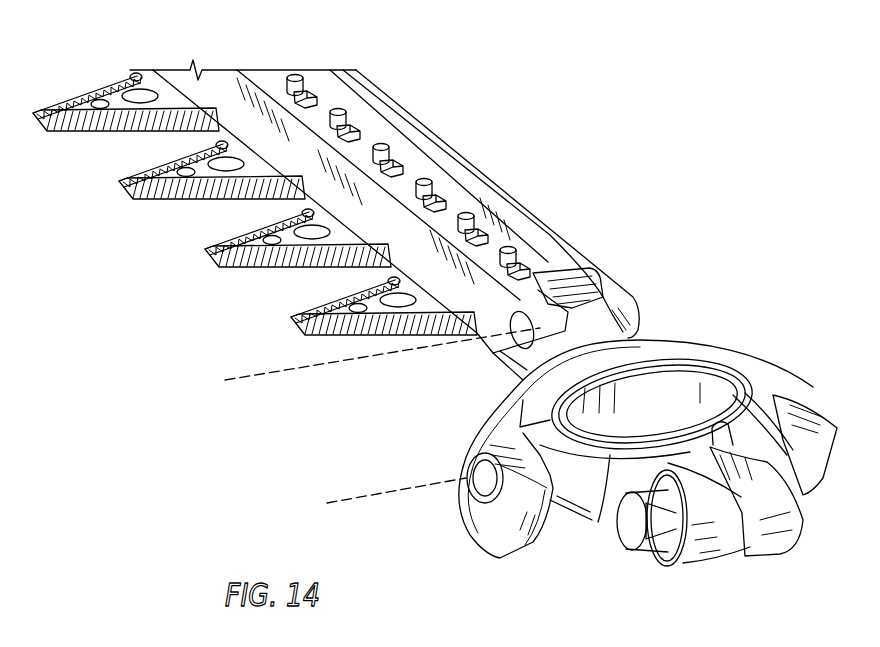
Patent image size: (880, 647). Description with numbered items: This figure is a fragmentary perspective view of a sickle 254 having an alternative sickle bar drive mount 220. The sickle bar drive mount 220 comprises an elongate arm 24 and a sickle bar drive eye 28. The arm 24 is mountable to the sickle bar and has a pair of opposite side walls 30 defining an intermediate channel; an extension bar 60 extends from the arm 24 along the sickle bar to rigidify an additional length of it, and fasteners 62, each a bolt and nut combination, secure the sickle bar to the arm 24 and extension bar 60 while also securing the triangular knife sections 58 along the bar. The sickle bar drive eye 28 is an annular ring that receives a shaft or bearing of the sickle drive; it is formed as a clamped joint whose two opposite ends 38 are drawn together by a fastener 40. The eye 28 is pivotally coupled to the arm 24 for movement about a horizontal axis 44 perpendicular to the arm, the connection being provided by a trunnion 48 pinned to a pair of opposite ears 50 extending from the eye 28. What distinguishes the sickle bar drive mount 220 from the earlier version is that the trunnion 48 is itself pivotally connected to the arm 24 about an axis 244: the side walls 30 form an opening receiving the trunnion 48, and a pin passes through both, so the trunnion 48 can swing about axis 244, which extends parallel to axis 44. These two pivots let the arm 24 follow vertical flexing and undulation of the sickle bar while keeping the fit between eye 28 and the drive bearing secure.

The arm 24 is at (575, 246).
The sickle bar drive eye 28 is at (587, 510).
The side walls 30 is at (393, 210).
The opposite ends 38 is at (773, 543).
The fastener 40 is at (633, 543).
The second horizontal axis 44 is at (413, 493).
The trunnion 48 is at (725, 350).
The ears 50 is at (547, 537).
The knife sections 58 is at (177, 200).
The extension bar 60 is at (330, 108).
The fasteners 62 is at (425, 207).
The sickle bar drive mount 220 is at (560, 233).
The axis 244 is at (339, 362).
The sickle 254 is at (533, 113).